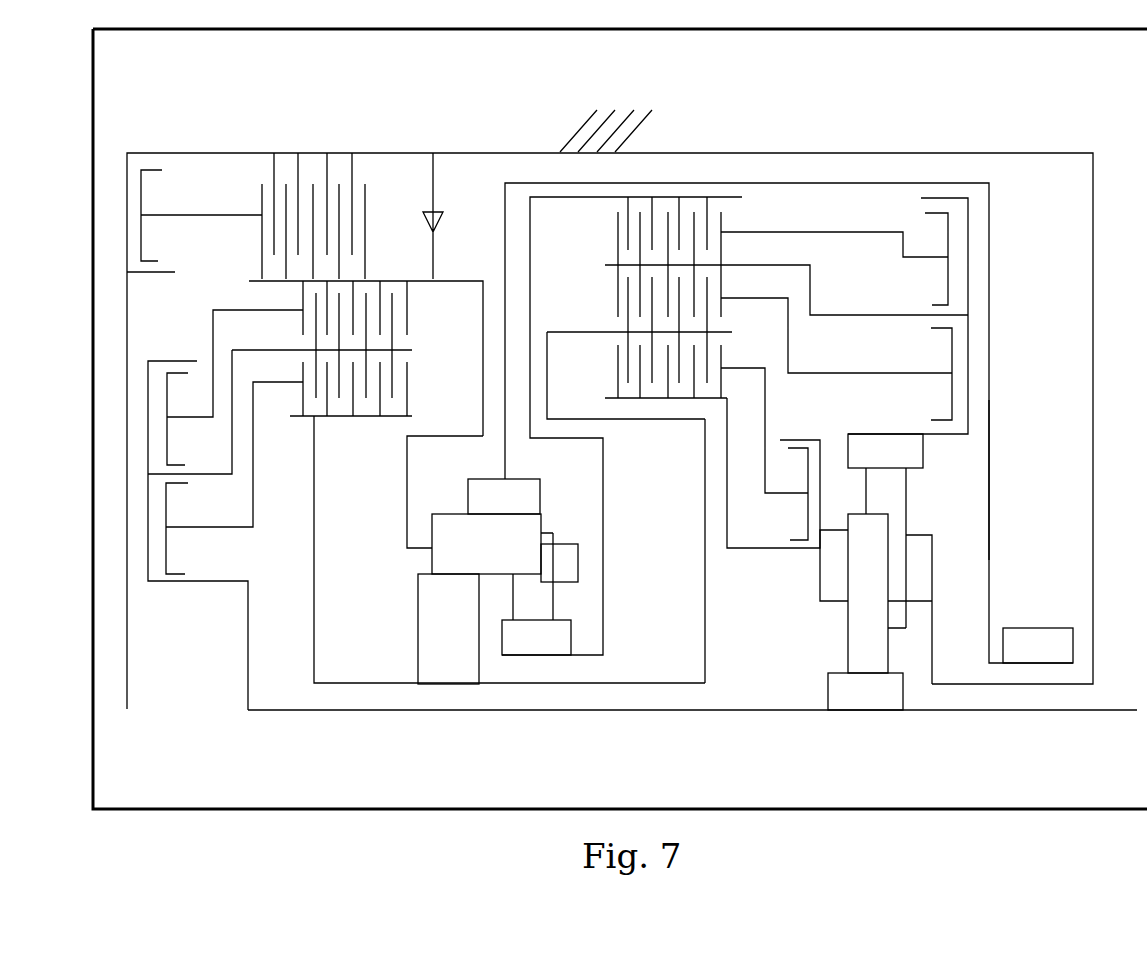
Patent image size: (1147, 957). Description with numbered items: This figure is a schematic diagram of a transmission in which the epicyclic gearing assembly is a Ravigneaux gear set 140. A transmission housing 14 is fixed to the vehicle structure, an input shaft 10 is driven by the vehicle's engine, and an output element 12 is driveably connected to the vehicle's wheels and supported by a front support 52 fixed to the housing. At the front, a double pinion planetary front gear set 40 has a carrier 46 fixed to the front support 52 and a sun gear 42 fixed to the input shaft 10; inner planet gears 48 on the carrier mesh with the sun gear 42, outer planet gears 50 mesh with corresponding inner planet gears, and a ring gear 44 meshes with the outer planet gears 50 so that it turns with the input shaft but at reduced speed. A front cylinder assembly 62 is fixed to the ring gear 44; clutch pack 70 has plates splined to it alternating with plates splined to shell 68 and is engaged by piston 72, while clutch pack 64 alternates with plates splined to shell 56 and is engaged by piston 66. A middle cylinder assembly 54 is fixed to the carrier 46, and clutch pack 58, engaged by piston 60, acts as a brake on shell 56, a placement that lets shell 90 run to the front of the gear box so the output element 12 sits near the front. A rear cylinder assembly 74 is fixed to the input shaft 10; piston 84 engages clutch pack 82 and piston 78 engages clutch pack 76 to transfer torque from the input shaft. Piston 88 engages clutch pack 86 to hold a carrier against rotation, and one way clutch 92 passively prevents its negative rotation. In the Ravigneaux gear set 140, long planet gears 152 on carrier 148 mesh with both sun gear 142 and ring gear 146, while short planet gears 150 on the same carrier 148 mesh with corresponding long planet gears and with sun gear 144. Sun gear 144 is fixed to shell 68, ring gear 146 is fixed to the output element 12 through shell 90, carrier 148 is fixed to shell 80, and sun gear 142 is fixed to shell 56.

The input shaft 10 is at (1108, 710).
The output element 12 is at (1042, 652).
The transmission housing 14 is at (590, 121).
The front gear set 40 is at (865, 720).
The sun gear 42 is at (865, 691).
The ring gear 44 is at (885, 451).
The carrier 46 is at (932, 542).
The inner planet gears 48 is at (870, 596).
The outer planet gears 50 is at (889, 501).
The front support 52 is at (989, 478).
The middle cylinder assembly 54 is at (778, 552).
The shell 56 is at (703, 645).
The clutch pack 58 is at (618, 377).
The piston 60 is at (795, 495).
The front cylinder assembly 62 is at (875, 317).
The clutch pack 64 is at (618, 310).
The piston 66 is at (857, 375).
The shell 68 is at (530, 266).
The clutch pack 70 is at (618, 240).
The piston 72 is at (887, 235).
The rear cylinder assembly 74 is at (202, 474).
The clutch pack 76 is at (408, 388).
The piston 78 is at (233, 527).
The shell 80 is at (446, 277).
The clutch pack 82 is at (408, 320).
The piston 84 is at (212, 340).
The clutch pack 86 is at (363, 238).
The piston 88 is at (194, 213).
The shell 90 is at (988, 268).
The one way clutch 92 is at (440, 212).
The Ravigneaux gear set 140 is at (509, 581).
The sun gear 142 is at (456, 667).
The sun gear 144 is at (550, 644).
The ring gear 146 is at (518, 503).
The carrier 148 is at (407, 530).
The short planet gears 150 is at (544, 604).
The long planet gears 152 is at (480, 543).